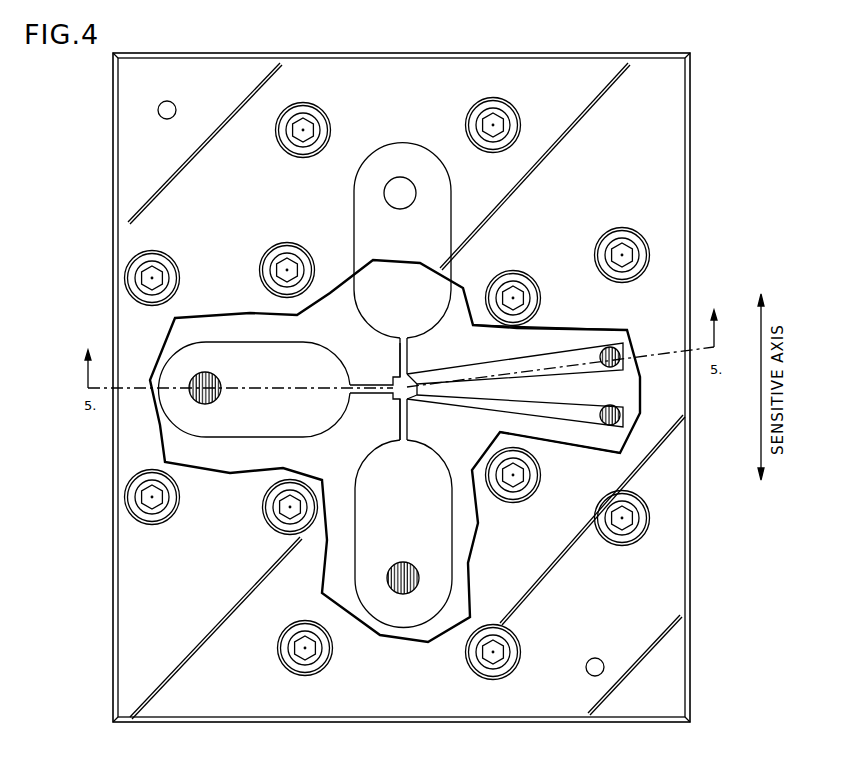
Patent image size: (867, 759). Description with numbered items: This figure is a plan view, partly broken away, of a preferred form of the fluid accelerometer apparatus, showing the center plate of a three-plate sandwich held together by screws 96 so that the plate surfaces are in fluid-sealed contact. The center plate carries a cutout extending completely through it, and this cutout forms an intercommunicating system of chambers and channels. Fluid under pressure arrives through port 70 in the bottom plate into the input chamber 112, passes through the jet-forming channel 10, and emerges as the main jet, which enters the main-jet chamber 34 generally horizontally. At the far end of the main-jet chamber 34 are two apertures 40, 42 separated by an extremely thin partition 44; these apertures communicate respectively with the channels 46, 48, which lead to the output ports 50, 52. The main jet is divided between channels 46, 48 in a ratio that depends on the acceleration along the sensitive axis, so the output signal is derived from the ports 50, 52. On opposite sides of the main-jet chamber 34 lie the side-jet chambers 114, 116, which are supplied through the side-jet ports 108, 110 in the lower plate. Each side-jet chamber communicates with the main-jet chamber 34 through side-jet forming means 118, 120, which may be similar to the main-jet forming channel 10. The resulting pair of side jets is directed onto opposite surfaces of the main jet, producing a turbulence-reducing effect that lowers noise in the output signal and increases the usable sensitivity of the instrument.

The jet-forming channel 10 is at (366, 383).
The main-jet chamber 34 is at (420, 386).
The aperture 40 is at (456, 376).
The aperture 42 is at (446, 407).
The partition 44 is at (438, 399).
The channel 46 is at (521, 361).
The channel 48 is at (502, 409).
The output port 50 is at (608, 347).
The output port 52 is at (604, 426).
The port 70 is at (216, 379).
The screws 96 is at (292, 152).
The side-jet port 108 is at (397, 207).
The side-jet port 110 is at (408, 564).
The input chamber 112 is at (285, 436).
The side-jet chamber 114 is at (355, 300).
The side-jet chamber 116 is at (450, 480).
The side-jet forming means 118 is at (398, 342).
The side-jet forming means 120 is at (398, 420).